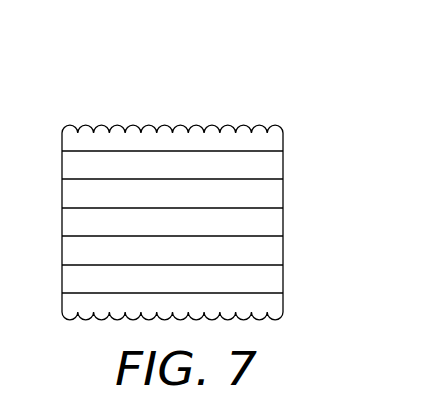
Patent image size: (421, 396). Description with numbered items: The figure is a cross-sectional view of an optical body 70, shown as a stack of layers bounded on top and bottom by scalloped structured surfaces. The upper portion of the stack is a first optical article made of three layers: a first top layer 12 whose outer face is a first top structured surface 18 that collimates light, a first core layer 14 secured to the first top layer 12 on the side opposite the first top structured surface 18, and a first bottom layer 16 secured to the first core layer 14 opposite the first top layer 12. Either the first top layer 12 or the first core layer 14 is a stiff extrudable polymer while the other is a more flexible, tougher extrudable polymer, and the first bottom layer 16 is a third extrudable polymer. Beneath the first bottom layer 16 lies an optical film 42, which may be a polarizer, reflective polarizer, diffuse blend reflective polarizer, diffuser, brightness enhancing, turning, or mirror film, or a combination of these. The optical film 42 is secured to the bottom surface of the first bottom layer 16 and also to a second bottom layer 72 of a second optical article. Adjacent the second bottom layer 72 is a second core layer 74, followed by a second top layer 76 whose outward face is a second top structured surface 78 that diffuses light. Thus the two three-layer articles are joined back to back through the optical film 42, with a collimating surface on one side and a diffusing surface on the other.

The optical body 70 is at (248, 92).
The first top structured surface 18 is at (261, 123).
The first top layer 12 is at (272, 137).
The first core layer 14 is at (272, 167).
The first bottom layer 16 is at (272, 196).
The optical film 42 is at (272, 221).
The second bottom layer 72 is at (272, 251).
The second core layer 74 is at (272, 280).
The second top layer 76 is at (272, 310).
The second top structured surface 78 is at (262, 318).